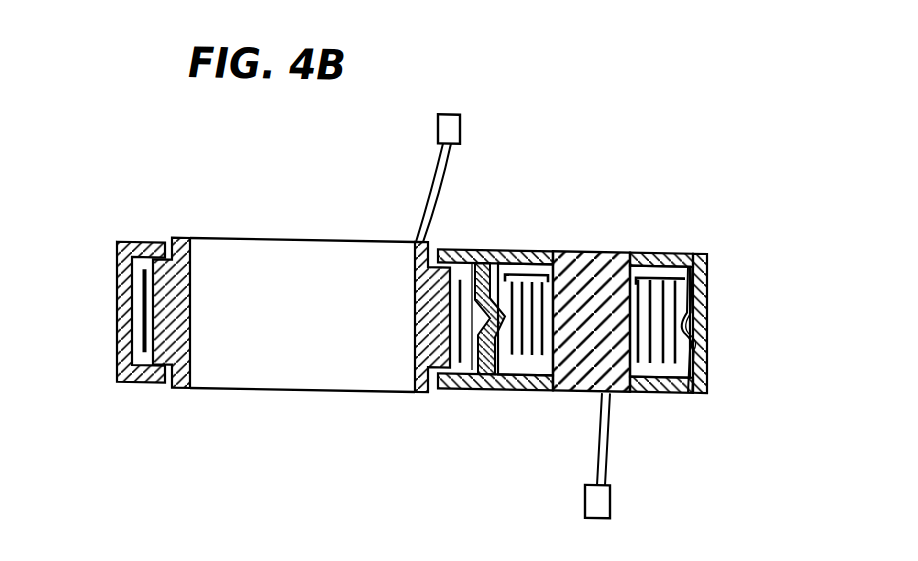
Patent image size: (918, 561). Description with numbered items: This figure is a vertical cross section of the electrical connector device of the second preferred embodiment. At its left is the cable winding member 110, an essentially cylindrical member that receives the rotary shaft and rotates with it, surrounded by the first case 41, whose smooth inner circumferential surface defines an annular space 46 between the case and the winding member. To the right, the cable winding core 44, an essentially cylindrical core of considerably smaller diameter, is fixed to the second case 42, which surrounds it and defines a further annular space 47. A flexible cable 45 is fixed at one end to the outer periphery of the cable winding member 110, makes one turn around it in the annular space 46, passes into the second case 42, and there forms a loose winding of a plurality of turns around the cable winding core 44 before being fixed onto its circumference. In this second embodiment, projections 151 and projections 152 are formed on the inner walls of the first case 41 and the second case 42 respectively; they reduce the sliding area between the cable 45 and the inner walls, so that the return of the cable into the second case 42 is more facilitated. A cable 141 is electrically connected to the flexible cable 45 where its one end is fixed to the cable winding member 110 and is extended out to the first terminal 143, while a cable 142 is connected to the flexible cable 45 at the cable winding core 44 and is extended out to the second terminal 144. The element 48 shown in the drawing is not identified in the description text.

The first case 41 is at (137, 243).
The cable winding member 110 is at (180, 239).
The flexible cable 45 is at (130, 344).
The projections 151 is at (470, 245).
The flexure member 48 is at (483, 383).
The second case 42 is at (532, 380).
The annular space 46 is at (457, 386).
The cable winding core 44 is at (607, 245).
The annular space 47 is at (688, 384).
The projections 152 is at (688, 257).
The cable 141 is at (453, 155).
The first terminal 143 is at (462, 120).
The cable 142 is at (607, 433).
The second terminal 144 is at (612, 493).